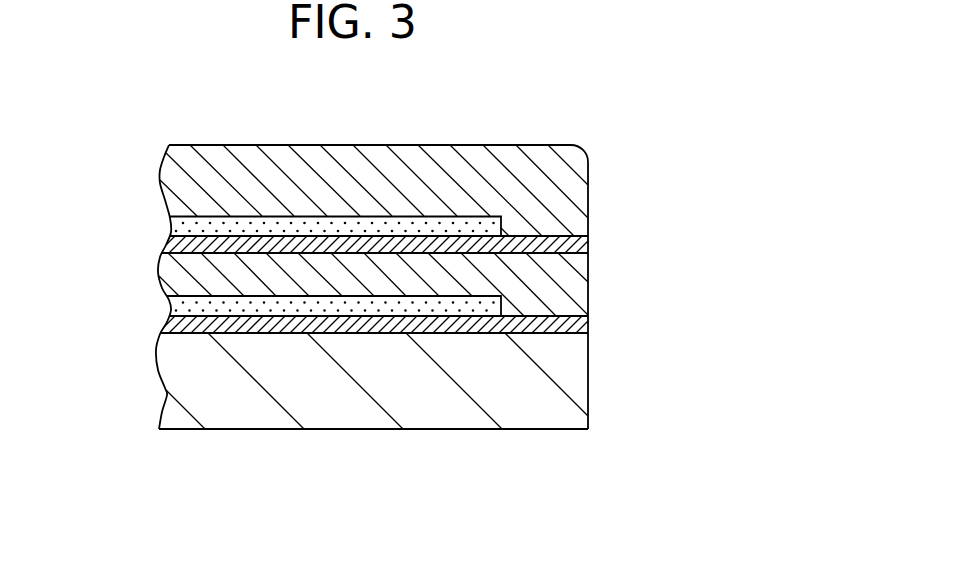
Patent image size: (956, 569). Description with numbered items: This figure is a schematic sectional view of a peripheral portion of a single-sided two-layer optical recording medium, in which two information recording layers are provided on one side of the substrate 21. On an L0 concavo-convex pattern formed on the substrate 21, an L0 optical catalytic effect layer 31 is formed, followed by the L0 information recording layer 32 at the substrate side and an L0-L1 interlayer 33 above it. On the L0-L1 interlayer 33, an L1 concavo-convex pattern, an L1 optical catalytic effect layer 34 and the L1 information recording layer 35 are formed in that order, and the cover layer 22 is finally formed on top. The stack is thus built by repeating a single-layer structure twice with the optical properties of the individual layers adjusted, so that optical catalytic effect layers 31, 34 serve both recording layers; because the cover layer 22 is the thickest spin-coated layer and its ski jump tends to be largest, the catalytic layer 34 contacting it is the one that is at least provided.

The substrate 21 is at (173, 412).
The cover layer 22 is at (247, 160).
The L0 optical catalytic effect layer 31 is at (158, 327).
The L0 information recording layer 32 is at (170, 305).
The L0-L1 interlayer 33 is at (177, 278).
The L1 optical catalytic effect layer 34 is at (166, 246).
The L1 information recording layer 35 is at (168, 222).